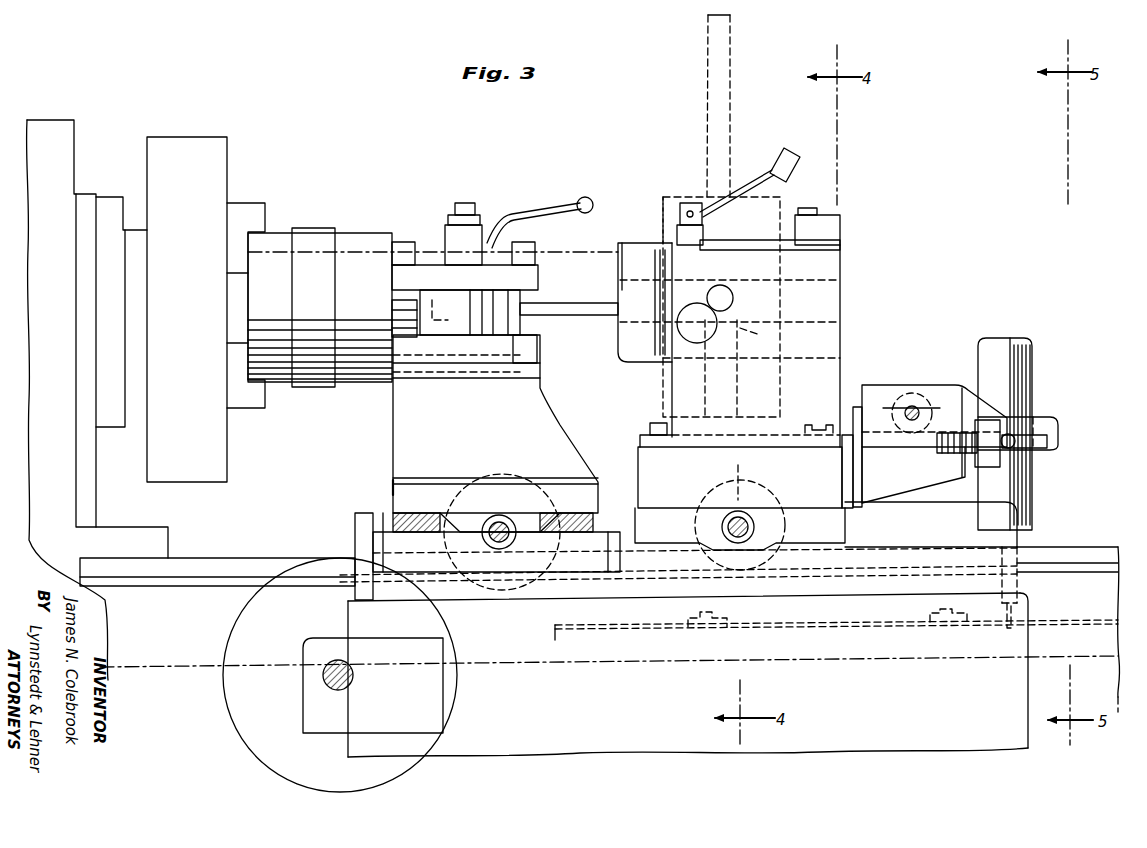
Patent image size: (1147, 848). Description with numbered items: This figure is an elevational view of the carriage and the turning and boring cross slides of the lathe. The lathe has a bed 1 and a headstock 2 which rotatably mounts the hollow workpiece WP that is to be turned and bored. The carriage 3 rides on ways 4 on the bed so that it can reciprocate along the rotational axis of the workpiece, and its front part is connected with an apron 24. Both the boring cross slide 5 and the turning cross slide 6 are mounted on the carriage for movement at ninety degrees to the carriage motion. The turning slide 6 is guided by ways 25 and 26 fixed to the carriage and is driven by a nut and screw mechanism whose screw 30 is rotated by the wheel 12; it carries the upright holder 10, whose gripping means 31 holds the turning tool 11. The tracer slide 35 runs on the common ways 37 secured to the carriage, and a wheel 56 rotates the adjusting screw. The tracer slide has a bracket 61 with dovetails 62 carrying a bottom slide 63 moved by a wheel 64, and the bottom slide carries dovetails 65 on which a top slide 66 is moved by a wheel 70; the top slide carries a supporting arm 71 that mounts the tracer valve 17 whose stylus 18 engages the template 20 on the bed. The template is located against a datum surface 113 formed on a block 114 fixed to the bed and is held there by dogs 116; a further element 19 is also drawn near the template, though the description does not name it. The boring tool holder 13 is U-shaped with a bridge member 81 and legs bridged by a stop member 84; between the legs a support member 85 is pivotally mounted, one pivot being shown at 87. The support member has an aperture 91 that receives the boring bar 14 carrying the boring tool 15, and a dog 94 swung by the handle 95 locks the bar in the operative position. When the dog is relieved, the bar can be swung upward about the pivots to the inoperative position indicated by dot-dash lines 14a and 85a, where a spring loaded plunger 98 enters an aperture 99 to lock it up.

The bed 1 is at (1118, 608).
The headstock 2 is at (76, 153).
The carriage 3 is at (353, 536).
The ways 4 is at (258, 560).
The boring cross slide 5 is at (636, 461).
The turning cross slide 6 is at (390, 487).
The holder 10 is at (393, 407).
The turning tool 11 is at (392, 305).
The wheel 12 is at (506, 496).
The boring tool holder 13 is at (668, 258).
The boring bar 14 is at (582, 303).
The inoperative position of boring bar 14a is at (706, 90).
The boring tool 15 is at (447, 318).
The tracer valve 17 is at (1033, 378).
The stylus 18 is at (1017, 612).
The clip 19 is at (948, 610).
The template 20 is at (1009, 628).
The apron 24 is at (546, 754).
The way 25 is at (410, 518).
The way 26 is at (582, 513).
The screw 30 is at (497, 546).
The gripping means 31 is at (427, 275).
The tracer slide 35 is at (690, 476).
The ways 37 is at (672, 530).
The wheel 56 is at (785, 482).
The bracket 61 is at (928, 478).
The dovetails 62 is at (846, 435).
The bottom slide 63 is at (853, 407).
The wheel 64 is at (1002, 456).
The dovetails 65 is at (893, 393).
The top slide 66 is at (940, 385).
The wheel 70 is at (912, 404).
The supporting arm 71 is at (1058, 430).
The bridge member 81 is at (787, 428).
The stop member 84 is at (835, 228).
The support member 85 is at (622, 245).
The inoperative position of support member 85a is at (675, 197).
The pivot 87 is at (733, 298).
The aperture 91 is at (822, 285).
The dog 94 is at (705, 232).
The handle 95 is at (795, 152).
The spring loaded plunger 98 is at (690, 326).
The aperture 99 is at (760, 335).
The datum surface 113 is at (790, 623).
The block 114 is at (556, 632).
The dogs 116 is at (722, 622).
The workpiece WP is at (352, 233).